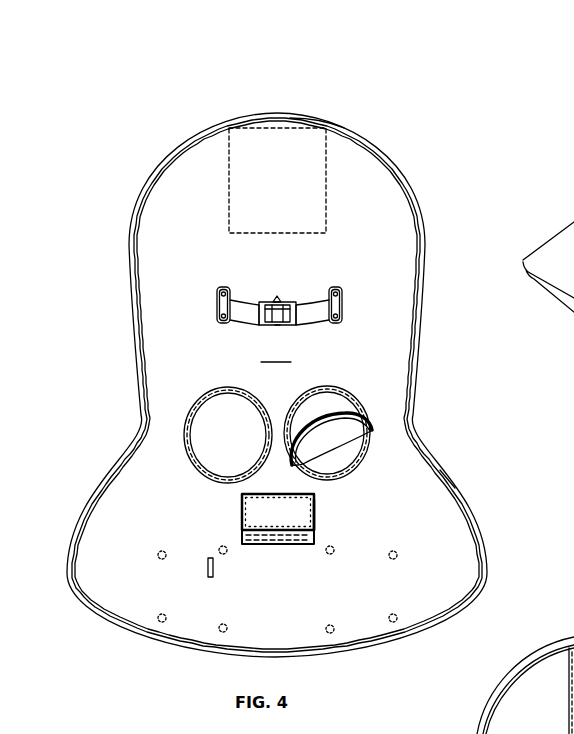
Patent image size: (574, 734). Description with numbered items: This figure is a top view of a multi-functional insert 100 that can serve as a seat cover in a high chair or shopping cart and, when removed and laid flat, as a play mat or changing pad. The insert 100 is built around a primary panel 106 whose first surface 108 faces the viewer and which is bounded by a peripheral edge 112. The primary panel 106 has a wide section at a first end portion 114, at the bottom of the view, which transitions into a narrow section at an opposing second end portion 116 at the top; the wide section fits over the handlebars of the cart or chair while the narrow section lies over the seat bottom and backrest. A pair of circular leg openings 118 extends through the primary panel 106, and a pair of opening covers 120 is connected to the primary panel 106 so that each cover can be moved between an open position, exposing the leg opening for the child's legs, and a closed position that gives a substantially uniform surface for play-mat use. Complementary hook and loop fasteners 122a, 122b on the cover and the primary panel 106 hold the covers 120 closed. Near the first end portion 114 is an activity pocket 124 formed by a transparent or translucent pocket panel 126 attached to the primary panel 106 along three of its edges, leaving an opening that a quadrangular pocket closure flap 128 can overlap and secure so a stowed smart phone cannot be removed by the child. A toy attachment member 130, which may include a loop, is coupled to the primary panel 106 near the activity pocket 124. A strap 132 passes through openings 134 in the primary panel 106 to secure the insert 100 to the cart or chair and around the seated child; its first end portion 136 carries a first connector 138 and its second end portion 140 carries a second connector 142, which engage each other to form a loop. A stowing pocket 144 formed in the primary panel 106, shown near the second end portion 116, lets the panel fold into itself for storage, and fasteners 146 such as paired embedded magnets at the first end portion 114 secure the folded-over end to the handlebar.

The multi-functional insert 100 is at (147, 126).
The primary panel 106 is at (186, 347).
The first surface 108 is at (277, 353).
The peripheral edge 112 is at (452, 476).
The first end portion 114 is at (125, 588).
The second end portion 116 is at (367, 150).
The leg openings 118 is at (342, 462).
The opening covers 120 is at (200, 430).
The fastener 122a is at (368, 410).
The fastener 122b is at (370, 448).
The activity pocket 124 is at (313, 519).
The pocket panel 126 is at (255, 509).
The pocket closure flap 128 is at (242, 537).
The toy attachment member 130 is at (207, 570).
The strap 132 is at (274, 282).
The openings 134 is at (217, 292).
The first end portion 136 is at (217, 312).
The first connector 138 is at (262, 302).
The second end portion 140 is at (343, 312).
The second connector 142 is at (293, 282).
The stowing pocket 144 is at (262, 135).
The fasteners 146 is at (397, 553).